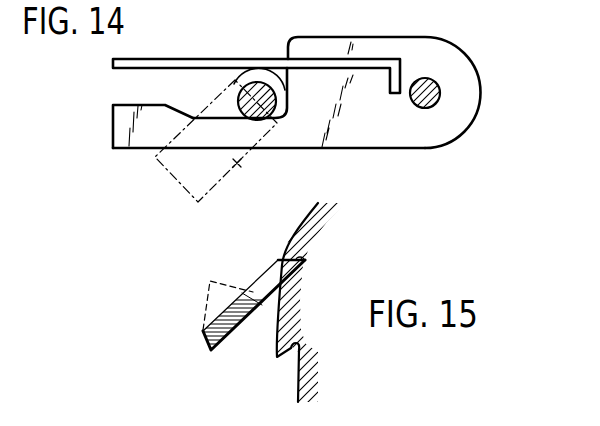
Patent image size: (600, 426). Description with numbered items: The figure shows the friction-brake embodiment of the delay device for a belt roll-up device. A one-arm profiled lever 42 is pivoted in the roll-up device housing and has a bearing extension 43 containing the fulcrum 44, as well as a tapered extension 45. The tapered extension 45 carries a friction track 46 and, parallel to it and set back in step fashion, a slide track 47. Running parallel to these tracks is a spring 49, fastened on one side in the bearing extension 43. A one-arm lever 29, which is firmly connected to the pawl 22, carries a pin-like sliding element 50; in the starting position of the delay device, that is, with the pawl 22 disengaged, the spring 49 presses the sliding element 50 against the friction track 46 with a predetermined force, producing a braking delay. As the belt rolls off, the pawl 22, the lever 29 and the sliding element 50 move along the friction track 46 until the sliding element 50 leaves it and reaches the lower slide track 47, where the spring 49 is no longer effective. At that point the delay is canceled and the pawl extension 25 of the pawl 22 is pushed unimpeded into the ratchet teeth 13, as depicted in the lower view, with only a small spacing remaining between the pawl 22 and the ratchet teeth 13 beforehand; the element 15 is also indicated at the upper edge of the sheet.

In FIG. 15, the ratchet teeth 13 is at (280, 355).
In FIG. 14, the support 15 is at (275, 6).
In FIG. 15, the pawl 22 is at (210, 328).
In FIG. 15, the pawl extension 25 is at (265, 282).
In FIG. 14, the one-arm lever 29 is at (240, 165).
In FIG. 14, the one-arm profiled lever 42 is at (403, 33).
In FIG. 14, the bearing extension 43 is at (452, 57).
In FIG. 14, the fulcrum 44 is at (440, 93).
In FIG. 14, the tapered extension 45 is at (372, 133).
In FIG. 14, the friction track 46 is at (135, 104).
In FIG. 14, the slide track 47 is at (217, 117).
In FIG. 14, the spring 49 is at (182, 59).
In FIG. 14, the sliding element 50 is at (276, 101).